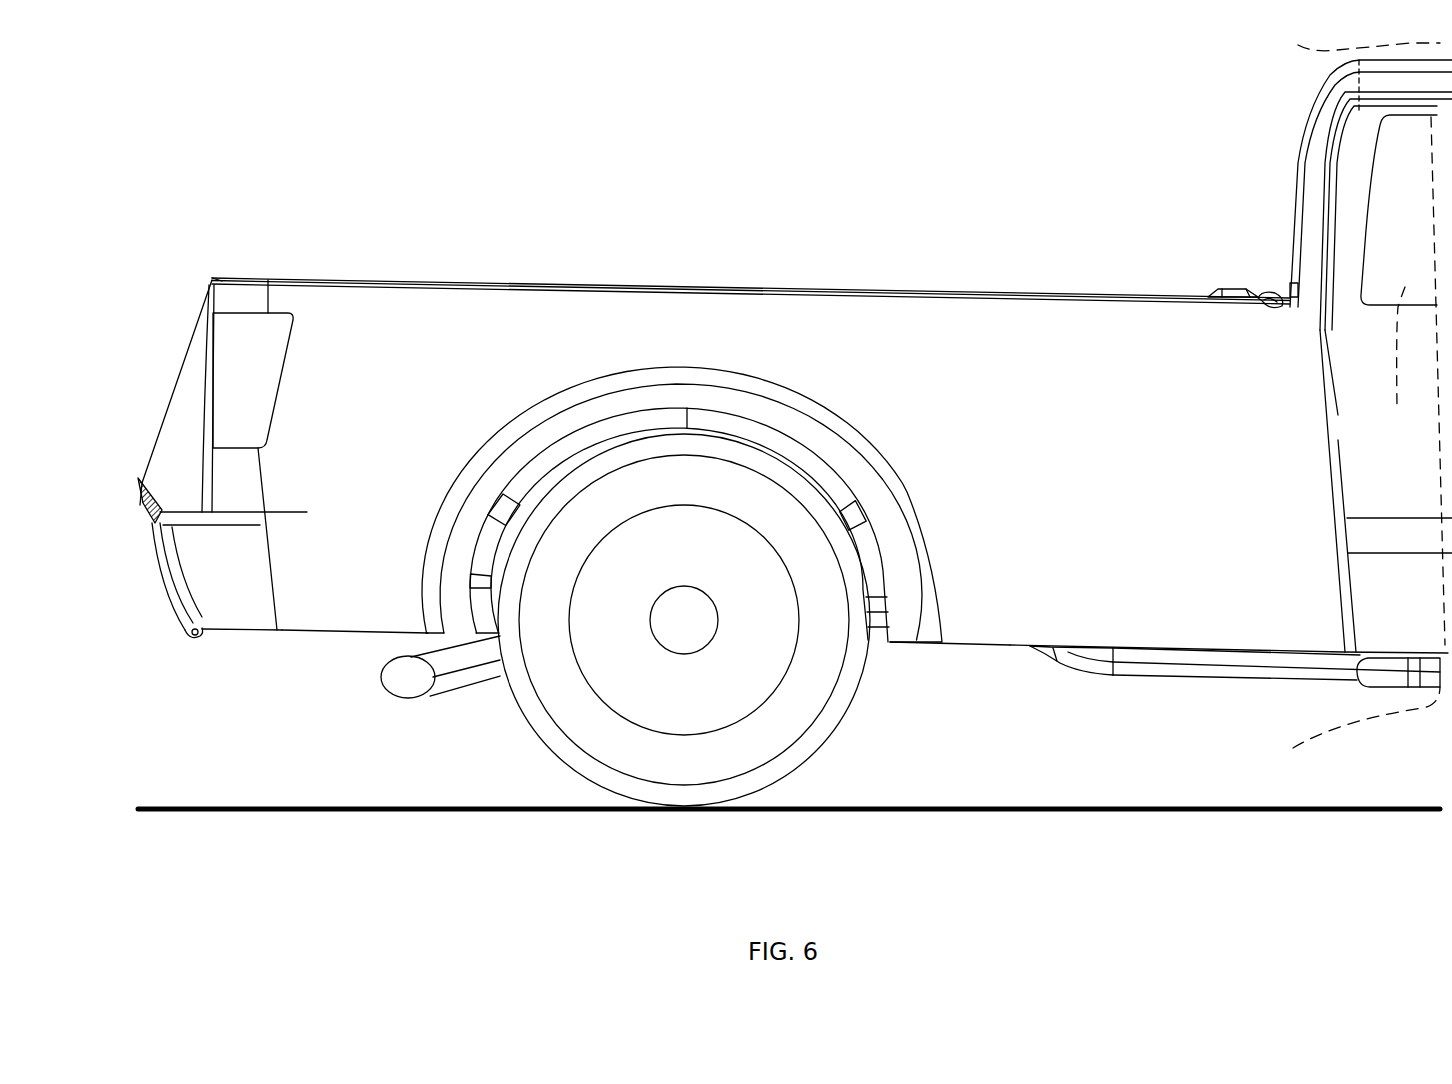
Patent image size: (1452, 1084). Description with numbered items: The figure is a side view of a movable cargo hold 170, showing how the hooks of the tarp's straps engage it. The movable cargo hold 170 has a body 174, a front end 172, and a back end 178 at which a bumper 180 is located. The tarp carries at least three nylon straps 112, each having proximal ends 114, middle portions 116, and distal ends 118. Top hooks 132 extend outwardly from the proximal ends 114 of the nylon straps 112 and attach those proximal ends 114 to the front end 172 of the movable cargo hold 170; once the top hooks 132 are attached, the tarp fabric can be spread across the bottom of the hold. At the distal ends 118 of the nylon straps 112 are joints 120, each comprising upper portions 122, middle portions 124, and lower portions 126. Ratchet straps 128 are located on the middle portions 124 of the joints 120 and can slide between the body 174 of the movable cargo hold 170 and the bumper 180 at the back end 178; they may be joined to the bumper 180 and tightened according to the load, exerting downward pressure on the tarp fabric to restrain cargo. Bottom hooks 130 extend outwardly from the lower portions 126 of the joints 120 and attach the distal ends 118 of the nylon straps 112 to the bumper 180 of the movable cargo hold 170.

The nylon straps 112 is at (1006, 228).
The proximal ends 114 is at (1152, 293).
The middle portions 116 is at (760, 283).
The distal ends 118 is at (221, 236).
The joints 120 is at (212, 278).
The upper portions 122 is at (193, 332).
The middle portions 124 is at (166, 447).
The lower portions 126 is at (165, 580).
The ratchet straps 128 is at (140, 512).
The bottom hooks 130 is at (197, 643).
The top hooks 132 is at (1272, 290).
The movable cargo hold 170 is at (541, 192).
The front end 172 is at (1300, 170).
The body 174 is at (655, 326).
The back end 178 is at (305, 607).
The bumper 180 is at (233, 627).